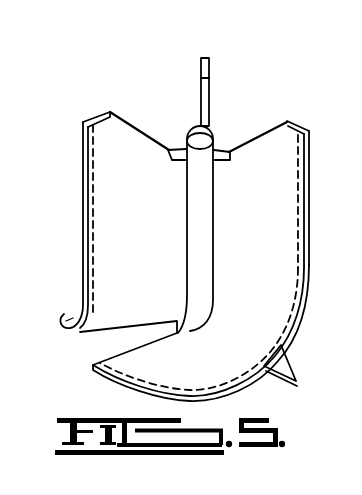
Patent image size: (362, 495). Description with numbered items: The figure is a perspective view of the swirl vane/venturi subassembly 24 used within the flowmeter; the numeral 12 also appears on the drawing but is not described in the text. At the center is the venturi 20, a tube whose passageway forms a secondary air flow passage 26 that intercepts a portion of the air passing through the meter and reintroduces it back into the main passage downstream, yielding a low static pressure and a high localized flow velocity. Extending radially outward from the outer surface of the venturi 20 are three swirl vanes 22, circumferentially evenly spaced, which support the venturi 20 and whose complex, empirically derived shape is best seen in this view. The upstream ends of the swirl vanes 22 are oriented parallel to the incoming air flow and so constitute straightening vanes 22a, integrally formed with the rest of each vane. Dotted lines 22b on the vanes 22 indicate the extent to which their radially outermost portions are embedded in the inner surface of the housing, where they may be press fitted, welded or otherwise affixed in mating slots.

The impeller 12 is at (352, 99).
The venturi 20 is at (203, 222).
The swirl vanes 22 is at (153, 237).
The straightening vanes 22a is at (117, 132).
The dotted lines 22b is at (80, 163).
The swirl vane/venturi subassembly 24 is at (214, 128).
The secondary air flow passage 26 is at (208, 137).